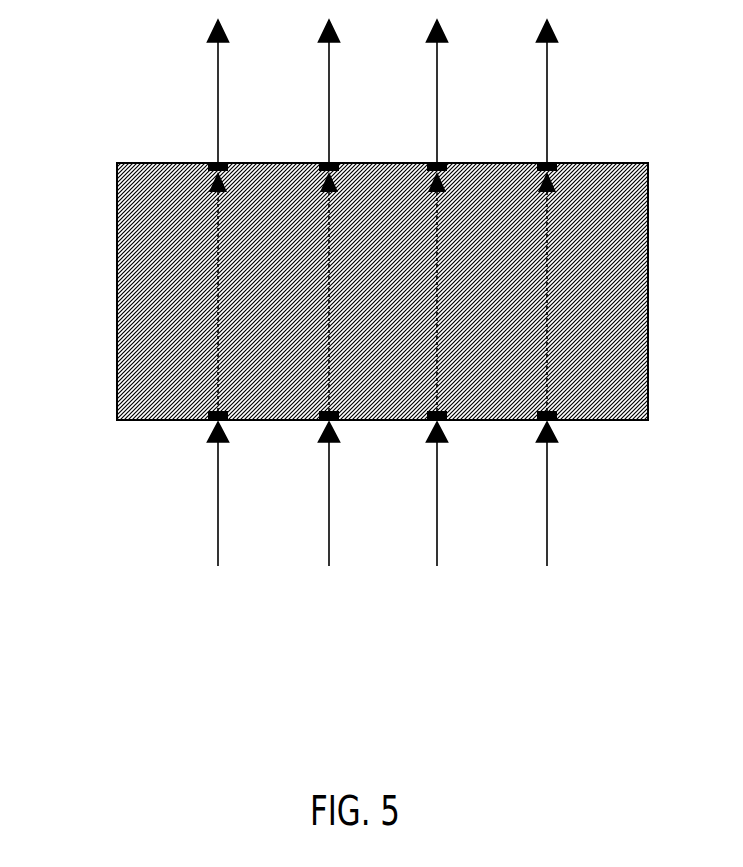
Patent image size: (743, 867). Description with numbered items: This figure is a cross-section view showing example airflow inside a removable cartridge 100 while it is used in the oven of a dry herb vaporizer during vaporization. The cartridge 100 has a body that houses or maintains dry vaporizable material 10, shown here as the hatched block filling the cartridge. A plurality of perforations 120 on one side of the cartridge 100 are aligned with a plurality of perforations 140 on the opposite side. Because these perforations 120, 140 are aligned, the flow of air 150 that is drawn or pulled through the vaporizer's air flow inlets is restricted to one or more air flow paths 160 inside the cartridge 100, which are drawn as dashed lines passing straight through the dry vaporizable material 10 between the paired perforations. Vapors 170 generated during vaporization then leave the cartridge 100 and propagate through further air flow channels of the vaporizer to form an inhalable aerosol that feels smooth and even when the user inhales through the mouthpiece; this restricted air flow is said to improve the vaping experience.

The removable cartridge 100 is at (102, 136).
The dry vaporizable material 10 is at (617, 329).
The perforations on the top side 120 is at (213, 421).
The perforations on the bottom side 140 is at (548, 163).
The air 150 is at (547, 510).
The air flow paths 160 is at (329, 268).
The vapors 170 is at (329, 86).